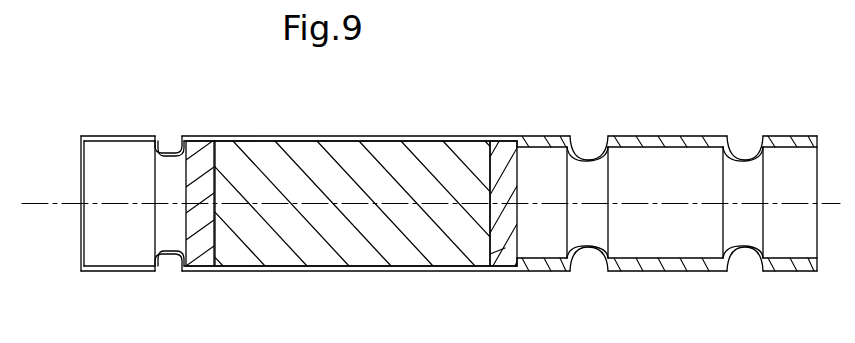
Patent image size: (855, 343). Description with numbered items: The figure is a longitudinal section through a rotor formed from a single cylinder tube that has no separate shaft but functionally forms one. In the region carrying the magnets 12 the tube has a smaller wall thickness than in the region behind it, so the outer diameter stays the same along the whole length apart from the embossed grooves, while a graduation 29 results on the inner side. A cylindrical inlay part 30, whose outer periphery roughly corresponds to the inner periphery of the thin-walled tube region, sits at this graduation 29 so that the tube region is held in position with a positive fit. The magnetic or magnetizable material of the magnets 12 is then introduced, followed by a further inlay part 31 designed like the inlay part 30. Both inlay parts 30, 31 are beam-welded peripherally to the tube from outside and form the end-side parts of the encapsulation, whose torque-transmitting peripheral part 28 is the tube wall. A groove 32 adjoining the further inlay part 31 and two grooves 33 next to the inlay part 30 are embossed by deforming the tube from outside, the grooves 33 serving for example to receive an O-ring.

The magnets 12 is at (402, 253).
The peripheral part of the encapsulation 28 is at (365, 136).
The graduation 29 is at (522, 140).
The inlay part 30 is at (500, 253).
The further inlay part 31 is at (203, 162).
The groove 32 is at (165, 268).
The grooves 33 is at (587, 156).